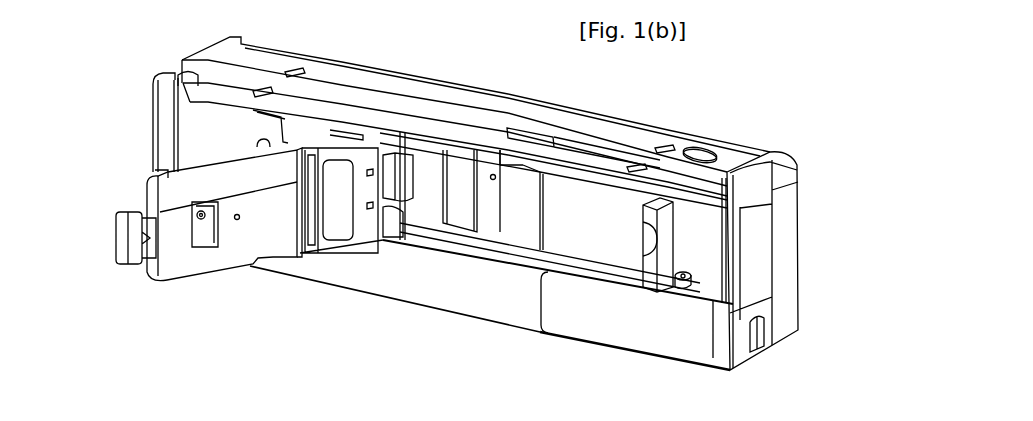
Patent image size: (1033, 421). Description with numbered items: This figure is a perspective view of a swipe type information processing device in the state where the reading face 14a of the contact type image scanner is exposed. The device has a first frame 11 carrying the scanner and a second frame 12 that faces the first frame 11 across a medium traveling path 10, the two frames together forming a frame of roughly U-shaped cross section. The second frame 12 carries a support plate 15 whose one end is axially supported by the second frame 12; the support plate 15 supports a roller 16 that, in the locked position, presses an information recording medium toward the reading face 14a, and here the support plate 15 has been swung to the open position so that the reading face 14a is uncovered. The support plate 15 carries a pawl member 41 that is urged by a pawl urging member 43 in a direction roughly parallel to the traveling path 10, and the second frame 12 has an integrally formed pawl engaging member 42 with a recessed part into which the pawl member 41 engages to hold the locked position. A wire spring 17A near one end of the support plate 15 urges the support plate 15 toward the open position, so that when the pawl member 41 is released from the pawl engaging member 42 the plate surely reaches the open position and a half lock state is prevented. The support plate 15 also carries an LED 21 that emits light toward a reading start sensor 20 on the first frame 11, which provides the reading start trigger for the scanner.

The medium traveling path 10 is at (757, 253).
The first frame 11 is at (223, 52).
The second frame 12 is at (207, 83).
The reading face 14a is at (460, 168).
The support plate 15 is at (220, 272).
The roller 16 is at (333, 256).
The wire spring 17A is at (396, 330).
The reading start sensor 20 is at (493, 180).
The LED 21 is at (312, 240).
The pawl member 41 is at (127, 264).
The pawl engaging member 42 is at (657, 292).
The pawl urging member 43 is at (202, 222).